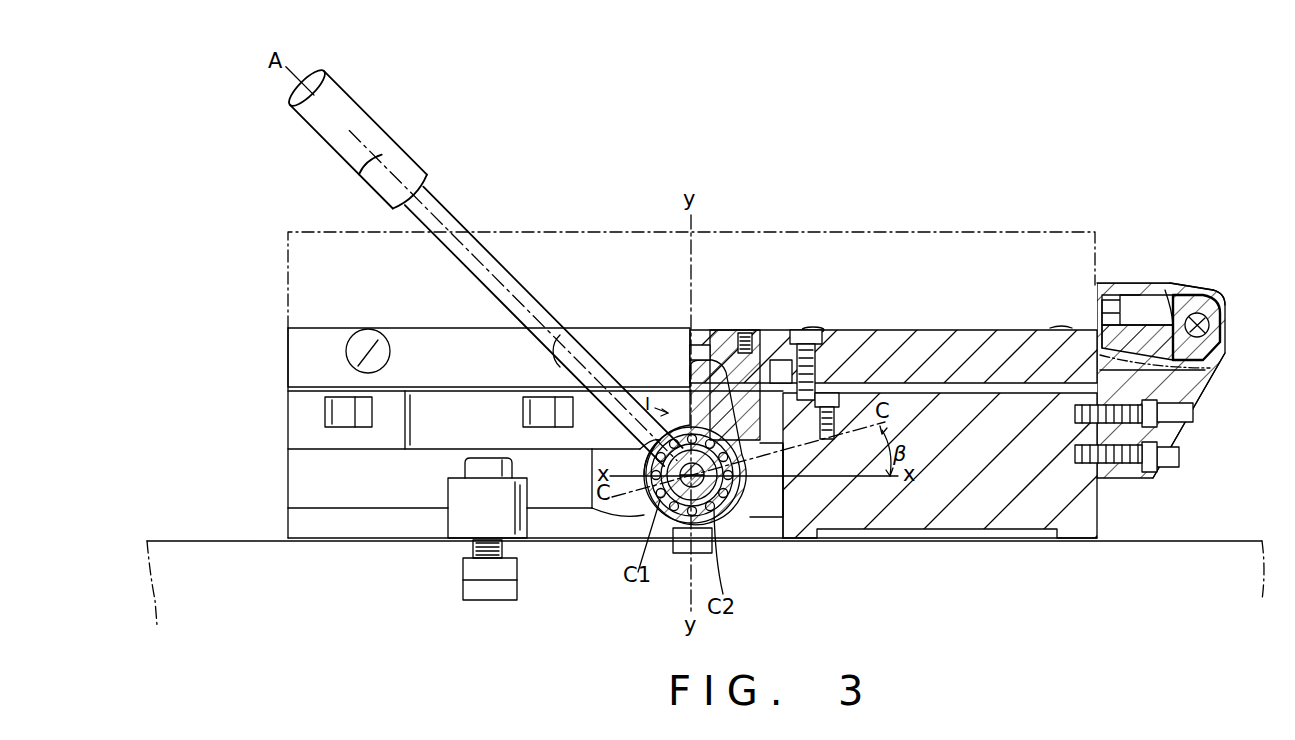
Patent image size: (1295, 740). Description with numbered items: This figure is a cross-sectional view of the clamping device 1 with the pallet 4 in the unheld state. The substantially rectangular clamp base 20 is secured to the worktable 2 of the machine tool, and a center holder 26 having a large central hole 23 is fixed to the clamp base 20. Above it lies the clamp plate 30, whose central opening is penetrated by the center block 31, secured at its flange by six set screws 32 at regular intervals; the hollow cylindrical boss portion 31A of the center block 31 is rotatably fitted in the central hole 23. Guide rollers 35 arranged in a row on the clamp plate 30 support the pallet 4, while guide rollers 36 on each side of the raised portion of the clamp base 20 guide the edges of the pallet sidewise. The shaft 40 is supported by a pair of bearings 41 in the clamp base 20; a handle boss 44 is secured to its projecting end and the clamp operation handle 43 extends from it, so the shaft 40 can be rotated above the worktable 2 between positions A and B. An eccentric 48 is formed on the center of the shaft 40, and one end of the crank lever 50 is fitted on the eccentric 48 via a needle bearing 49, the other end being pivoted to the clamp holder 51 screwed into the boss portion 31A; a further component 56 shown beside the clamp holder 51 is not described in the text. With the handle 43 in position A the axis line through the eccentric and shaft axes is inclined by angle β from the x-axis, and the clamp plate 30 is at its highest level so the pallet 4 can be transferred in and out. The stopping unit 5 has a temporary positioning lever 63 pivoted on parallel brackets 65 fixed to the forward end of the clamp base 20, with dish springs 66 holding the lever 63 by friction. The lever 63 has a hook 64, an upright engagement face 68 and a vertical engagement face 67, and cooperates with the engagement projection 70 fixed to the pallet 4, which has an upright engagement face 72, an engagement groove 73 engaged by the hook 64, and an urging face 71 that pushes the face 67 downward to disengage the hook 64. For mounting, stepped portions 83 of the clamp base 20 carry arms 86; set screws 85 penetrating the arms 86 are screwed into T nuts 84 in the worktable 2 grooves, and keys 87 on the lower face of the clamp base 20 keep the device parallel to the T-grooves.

The clamping device 1 is at (288, 440).
The worktable 2 is at (1262, 541).
The pallet 4 is at (1012, 232).
The stopping unit 5 is at (1233, 288).
The clamp base 20 is at (288, 400).
The central hole 23 is at (827, 505).
The center holder 26 is at (823, 500).
The clamp plate 30 is at (288, 356).
The center block 31 is at (775, 340).
The hollow cylindrical boss portion 31A is at (780, 390).
The set screws 32 is at (808, 332).
The guide rollers 35 is at (365, 332).
The guide rollers 36 is at (325, 410).
The shaft 40 is at (643, 455).
The bearings 41 is at (788, 515).
The clamp operation handle 43 is at (455, 213).
The handle boss 44 is at (622, 502).
The eccentric 48 is at (730, 505).
The needle bearing 49 is at (643, 500).
The crank lever 50 is at (753, 505).
The clamp holder 51 is at (742, 345).
The support post 56 is at (748, 360).
The temporary positioning lever 63 is at (1227, 308).
The hook 64 is at (1113, 322).
The brackets 65 is at (1222, 360).
The dish spring 66 is at (1227, 327).
The vertical engagement face 67 is at (1165, 350).
The upright engagement face 68 is at (1170, 300).
The engagement projection 70 is at (1165, 285).
The urging face 71 is at (1185, 340).
The upright engagement face 72 is at (1222, 290).
The engagement groove 73 is at (1103, 283).
The stepped portions 83 is at (378, 510).
The T nuts 84 is at (500, 600).
The set screws 85 is at (475, 548).
The arms 86 is at (448, 505).
The keys 87 is at (682, 553).